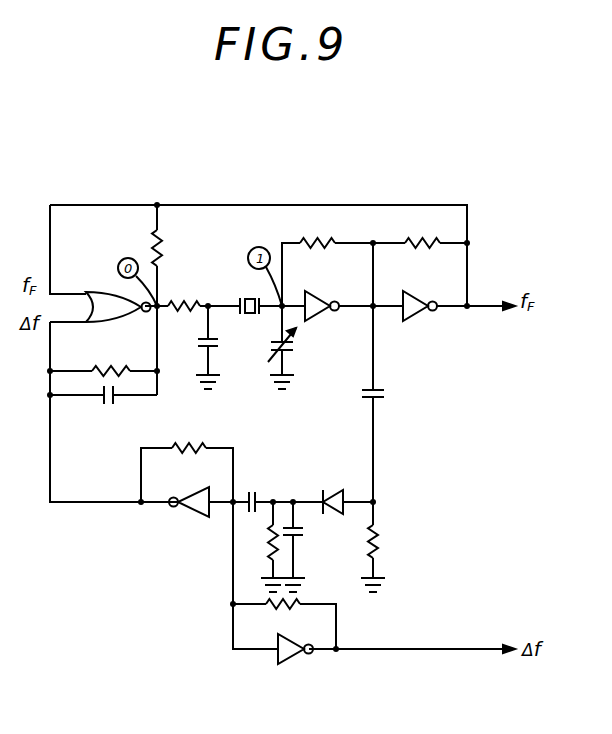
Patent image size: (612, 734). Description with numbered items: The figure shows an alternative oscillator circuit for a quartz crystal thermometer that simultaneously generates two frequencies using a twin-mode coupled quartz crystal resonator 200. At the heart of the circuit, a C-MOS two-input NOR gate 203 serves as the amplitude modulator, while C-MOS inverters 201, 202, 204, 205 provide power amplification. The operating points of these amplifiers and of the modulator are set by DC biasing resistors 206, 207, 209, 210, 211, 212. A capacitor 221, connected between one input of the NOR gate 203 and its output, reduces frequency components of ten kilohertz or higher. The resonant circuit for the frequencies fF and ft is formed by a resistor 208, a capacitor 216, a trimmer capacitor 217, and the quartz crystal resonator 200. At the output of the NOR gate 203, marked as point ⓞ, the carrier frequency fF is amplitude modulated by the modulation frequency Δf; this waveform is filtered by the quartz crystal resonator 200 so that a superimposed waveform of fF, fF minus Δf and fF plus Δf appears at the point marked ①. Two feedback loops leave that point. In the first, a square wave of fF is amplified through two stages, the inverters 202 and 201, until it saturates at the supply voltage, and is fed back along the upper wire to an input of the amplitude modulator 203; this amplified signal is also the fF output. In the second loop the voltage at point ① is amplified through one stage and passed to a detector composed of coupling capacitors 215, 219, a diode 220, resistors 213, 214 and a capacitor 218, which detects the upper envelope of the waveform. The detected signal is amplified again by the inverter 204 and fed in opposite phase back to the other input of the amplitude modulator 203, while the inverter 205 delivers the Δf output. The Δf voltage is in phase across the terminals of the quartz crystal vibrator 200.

The twin-mode coupled quartz crystal resonator 200 is at (246, 298).
The C-MOS inverter 201 is at (416, 322).
The C-MOS inverter 202 is at (318, 322).
The C-MOS two-input NOR gate 203 is at (99, 292).
The C-MOS inverter 204 is at (185, 518).
The C-MOS inverter 205 is at (288, 665).
The DC biasing resistor 206 is at (420, 230).
The DC biasing resistor 207 is at (319, 230).
The resistor 208 is at (181, 297).
The DC biasing resistor 209 is at (179, 248).
The DC biasing resistor 210 is at (124, 369).
The DC biasing resistor 211 is at (205, 444).
The DC biasing resistor 212 is at (270, 608).
The resistor 213 is at (378, 536).
The resistor 214 is at (258, 545).
The coupling capacitor 215 is at (386, 392).
The capacitor 216 is at (215, 348).
The trimmer capacitor 217 is at (269, 345).
The capacitor 218 is at (300, 532).
The coupling capacitor 219 is at (262, 480).
The diode 220 is at (337, 488).
The capacitor 221 is at (112, 406).